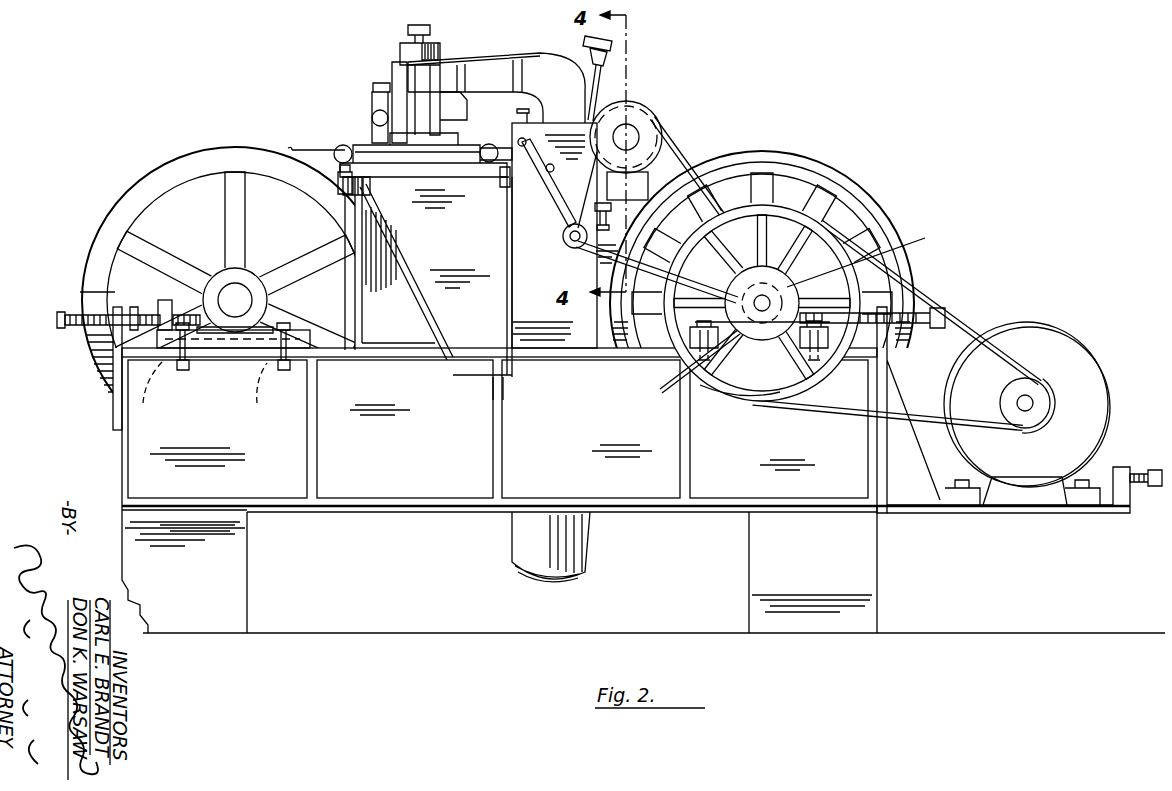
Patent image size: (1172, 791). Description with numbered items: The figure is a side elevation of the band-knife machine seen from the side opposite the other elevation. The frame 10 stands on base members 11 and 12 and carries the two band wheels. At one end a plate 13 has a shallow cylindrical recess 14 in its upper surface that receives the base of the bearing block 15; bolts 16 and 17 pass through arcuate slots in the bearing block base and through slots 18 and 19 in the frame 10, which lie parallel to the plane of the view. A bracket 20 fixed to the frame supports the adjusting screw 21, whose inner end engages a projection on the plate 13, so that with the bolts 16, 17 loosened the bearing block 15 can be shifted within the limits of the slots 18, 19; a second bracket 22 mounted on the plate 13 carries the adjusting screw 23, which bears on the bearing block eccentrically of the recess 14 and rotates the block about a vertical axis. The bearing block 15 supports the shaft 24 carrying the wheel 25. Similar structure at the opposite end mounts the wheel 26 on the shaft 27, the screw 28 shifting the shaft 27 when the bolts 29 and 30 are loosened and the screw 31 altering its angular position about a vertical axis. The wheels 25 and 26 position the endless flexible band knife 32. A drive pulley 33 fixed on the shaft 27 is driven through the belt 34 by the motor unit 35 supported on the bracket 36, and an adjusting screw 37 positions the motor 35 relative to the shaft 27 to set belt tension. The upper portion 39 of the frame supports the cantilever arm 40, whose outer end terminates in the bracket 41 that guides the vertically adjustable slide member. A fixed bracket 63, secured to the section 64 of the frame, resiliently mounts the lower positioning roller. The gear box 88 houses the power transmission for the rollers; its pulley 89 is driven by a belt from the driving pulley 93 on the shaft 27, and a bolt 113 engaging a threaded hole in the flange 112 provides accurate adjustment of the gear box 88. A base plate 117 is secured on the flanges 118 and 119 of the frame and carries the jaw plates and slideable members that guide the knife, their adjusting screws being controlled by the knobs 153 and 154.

The frame 10 is at (488, 525).
The base member 11 is at (225, 562).
The base member 12 is at (770, 567).
The plate 13 is at (310, 333).
The shallow cylindrical recess 14 is at (232, 342).
The bearing block 15 is at (273, 320).
The bolt 16 is at (182, 370).
The bolt 17 is at (283, 368).
The slot 18 is at (146, 393).
The slot 19 is at (255, 394).
The bracket 20 is at (117, 343).
The adjusting screw 21 is at (63, 330).
The bracket 22 is at (163, 302).
The adjusting screw 23 is at (80, 292).
The shaft 24 is at (240, 292).
The wheel 25 is at (95, 257).
The wheel 26 is at (858, 203).
The shaft 27 is at (686, 373).
The screw 28 is at (933, 308).
The bolt 29 is at (612, 314).
The bolt 30 is at (893, 287).
The screw 31 is at (790, 287).
The endless flexible band knife 32 is at (292, 152).
The drive pulley 33 is at (742, 395).
The belt 34 is at (973, 323).
The motor unit 35 is at (1050, 325).
The bracket 36 is at (998, 513).
The adjusting screw 37 is at (1133, 465).
The upper portion 39 is at (566, 262).
The cantilever arm 40 is at (500, 57).
The bracket 41 is at (440, 55).
The fixed bracket 63 is at (340, 182).
The section 64 is at (399, 307).
The gear box 88 is at (617, 183).
The pulley 89 is at (657, 123).
The driving pulley 93 is at (783, 290).
The flange 112 is at (598, 212).
The bolt 113 is at (563, 233).
The base plate 117 is at (430, 167).
The flange 118 is at (370, 183).
The flange 119 is at (500, 180).
The knob 153 is at (340, 146).
The knob 154 is at (488, 145).